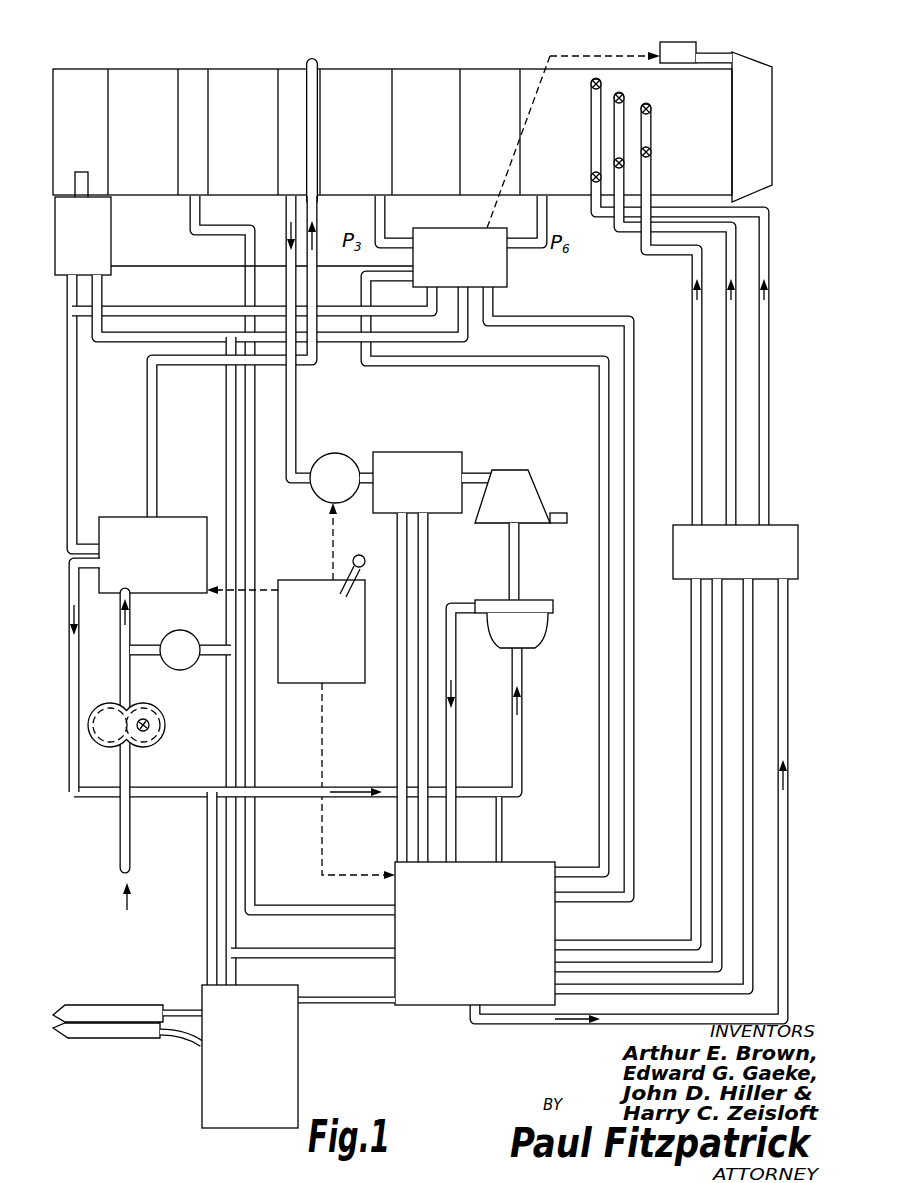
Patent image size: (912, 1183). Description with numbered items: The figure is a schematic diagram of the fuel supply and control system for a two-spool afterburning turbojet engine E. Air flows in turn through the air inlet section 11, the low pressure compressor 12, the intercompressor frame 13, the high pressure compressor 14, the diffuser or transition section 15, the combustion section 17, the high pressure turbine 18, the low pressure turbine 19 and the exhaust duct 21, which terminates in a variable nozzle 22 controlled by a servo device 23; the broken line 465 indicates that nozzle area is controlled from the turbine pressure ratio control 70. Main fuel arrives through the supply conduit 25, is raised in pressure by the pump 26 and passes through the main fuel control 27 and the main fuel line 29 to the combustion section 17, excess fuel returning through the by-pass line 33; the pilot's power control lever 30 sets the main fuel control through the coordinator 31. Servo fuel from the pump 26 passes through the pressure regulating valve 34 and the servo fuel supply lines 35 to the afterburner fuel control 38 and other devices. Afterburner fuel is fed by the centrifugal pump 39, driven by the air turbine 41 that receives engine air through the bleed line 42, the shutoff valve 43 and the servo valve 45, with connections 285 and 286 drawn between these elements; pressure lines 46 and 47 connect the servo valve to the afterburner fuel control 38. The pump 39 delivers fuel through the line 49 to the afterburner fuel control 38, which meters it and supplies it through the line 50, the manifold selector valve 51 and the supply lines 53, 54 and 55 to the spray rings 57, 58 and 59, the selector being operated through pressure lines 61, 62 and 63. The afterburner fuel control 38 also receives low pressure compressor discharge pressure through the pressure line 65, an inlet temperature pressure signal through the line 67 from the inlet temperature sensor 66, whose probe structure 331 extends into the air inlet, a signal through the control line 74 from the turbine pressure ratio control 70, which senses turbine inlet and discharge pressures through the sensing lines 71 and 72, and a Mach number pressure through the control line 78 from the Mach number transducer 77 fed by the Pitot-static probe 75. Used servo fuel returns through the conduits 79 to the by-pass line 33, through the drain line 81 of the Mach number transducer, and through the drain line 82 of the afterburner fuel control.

The afterburning turbojet engine E is at (51, 72).
The air inlet section 11 is at (89, 70).
The low pressure compressor 12 is at (147, 75).
The intercompressor frame 13 is at (197, 75).
The high pressure compressor 14 is at (248, 80).
The diffuser or transition section 15 is at (296, 72).
The combustion section 17 is at (358, 78).
The high pressure turbine 18 is at (426, 72).
The low pressure turbine 19 is at (494, 78).
The broken line 465 is at (560, 42).
The exhaust duct 21 is at (612, 68).
The servo device 23 is at (672, 43).
The variable nozzle 22 is at (752, 74).
The fuel manifold or spray ring 59 is at (591, 86).
The fuel manifold or spray ring 58 is at (623, 100).
The fuel manifold or spray ring 57 is at (653, 108).
The probe structure 331 is at (70, 180).
The inlet air temperature transducer 66 is at (62, 214).
The pressure line 65 is at (200, 214).
The line 67 is at (163, 266).
The main fuel line 29 is at (322, 240).
The pressure sensing line 71 is at (385, 236).
The turbine pressure ratio control 70 is at (470, 230).
The pressure sensing line 72 is at (548, 228).
The conduit 79 is at (215, 311).
The servo fuel supply line 35 is at (125, 344).
The control line 74 is at (548, 318).
The supply line 53 is at (694, 476).
The supply line 54 is at (735, 374).
The supply line 55 is at (766, 420).
The manifold selector valve 51 is at (784, 528).
The bleed line 42 is at (297, 418).
The shutoff valve 43 is at (351, 457).
The connecting line 285 is at (367, 470).
The servo valve 45 is at (420, 455).
The connecting line 286 is at (482, 474).
The air turbine 41 is at (538, 482).
The main fuel control 27 is at (190, 520).
The coordinator 31 is at (308, 583).
The pilot's power control lever 30 is at (360, 556).
The pressure regulating valve 34 is at (190, 632).
The pump 26 is at (165, 720).
The by-pass line 33 is at (69, 668).
The conduit 25 is at (120, 852).
The drain line 81 is at (207, 862).
The pressure line 46 is at (397, 717).
The pressure line 47 is at (430, 600).
The line 49 is at (456, 752).
The centrifugal pump 39 is at (535, 632).
The drain line 82 is at (504, 836).
The pressure line 63 is at (691, 674).
The pressure line 62 is at (712, 706).
The pressure line 61 is at (754, 706).
The line 50 is at (788, 806).
The afterburner fuel control 38 is at (536, 864).
The control line 78 is at (325, 1004).
The Pitot-static pressure probe 75 is at (118, 1007).
The Mach number transducer 77 is at (210, 1088).